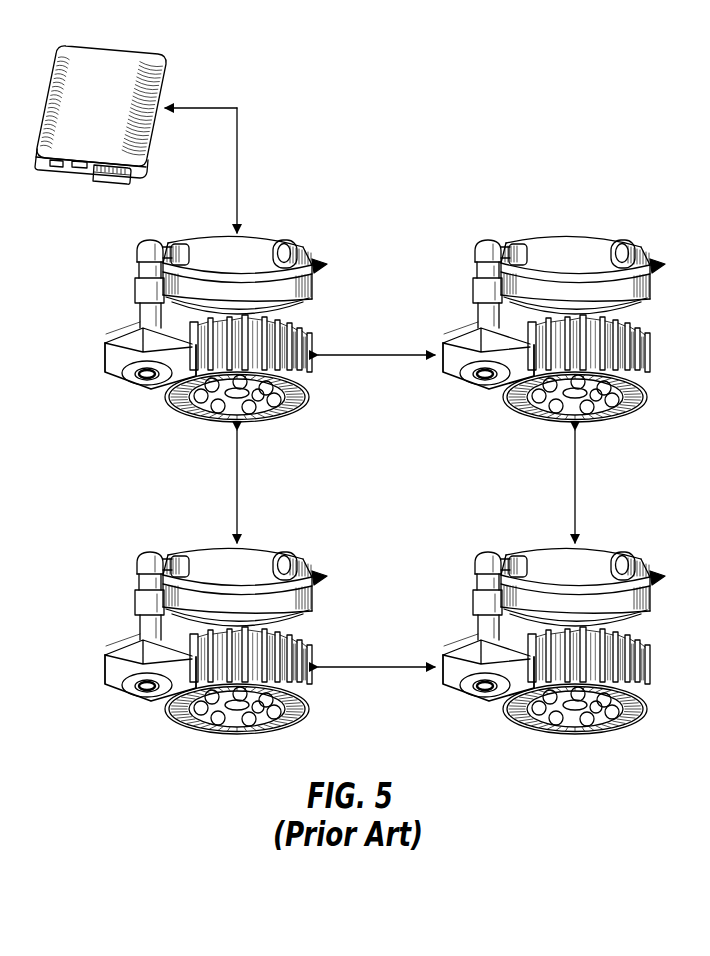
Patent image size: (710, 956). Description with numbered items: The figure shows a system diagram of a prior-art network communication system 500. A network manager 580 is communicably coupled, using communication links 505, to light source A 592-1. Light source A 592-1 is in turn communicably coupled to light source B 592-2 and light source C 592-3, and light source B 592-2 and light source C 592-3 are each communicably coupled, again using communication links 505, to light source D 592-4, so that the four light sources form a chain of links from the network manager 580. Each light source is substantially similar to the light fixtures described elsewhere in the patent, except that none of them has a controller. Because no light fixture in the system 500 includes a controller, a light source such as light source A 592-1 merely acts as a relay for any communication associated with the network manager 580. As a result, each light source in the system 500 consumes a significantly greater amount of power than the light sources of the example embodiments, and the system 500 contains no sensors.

The system 500 is at (564, 87).
The communication links 505 is at (237, 170).
The network manager 580 is at (78, 182).
The light source A 592-1 is at (266, 240).
The light source B 592-2 is at (268, 551).
The light source C 592-3 is at (574, 238).
The light source D 592-4 is at (607, 551).